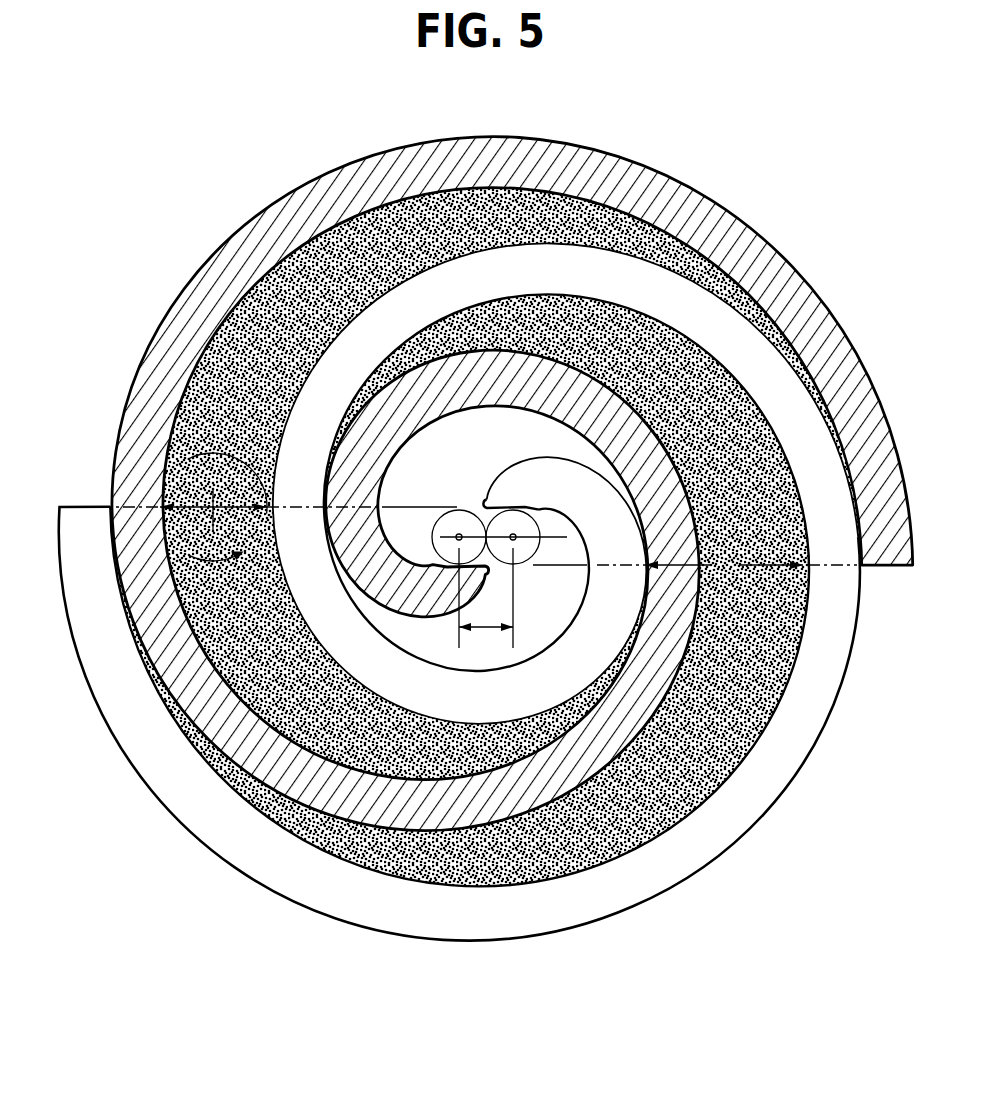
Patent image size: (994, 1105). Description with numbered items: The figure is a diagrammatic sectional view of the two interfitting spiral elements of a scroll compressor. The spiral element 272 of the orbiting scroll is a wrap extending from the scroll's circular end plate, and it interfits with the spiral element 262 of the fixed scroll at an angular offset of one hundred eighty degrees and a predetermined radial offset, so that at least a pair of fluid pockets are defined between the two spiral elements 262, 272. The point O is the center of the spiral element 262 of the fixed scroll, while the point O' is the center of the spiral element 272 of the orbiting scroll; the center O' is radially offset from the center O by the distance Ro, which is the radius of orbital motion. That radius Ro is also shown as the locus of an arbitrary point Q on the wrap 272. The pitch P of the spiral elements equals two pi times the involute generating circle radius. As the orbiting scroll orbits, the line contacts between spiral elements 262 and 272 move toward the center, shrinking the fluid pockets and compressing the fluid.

The spiral element of orbiting scroll 272 is at (540, 163).
The spiral element of fixed scroll 262 is at (745, 822).
The center of spiral element of fixed scroll O is at (503, 557).
The center of spiral element of orbiting scroll O' is at (449, 511).
The arbitrary point on wrap Q is at (158, 508).
The pitch of the spiral elements P is at (695, 566).
The radius of orbital motion Ro is at (192, 459).